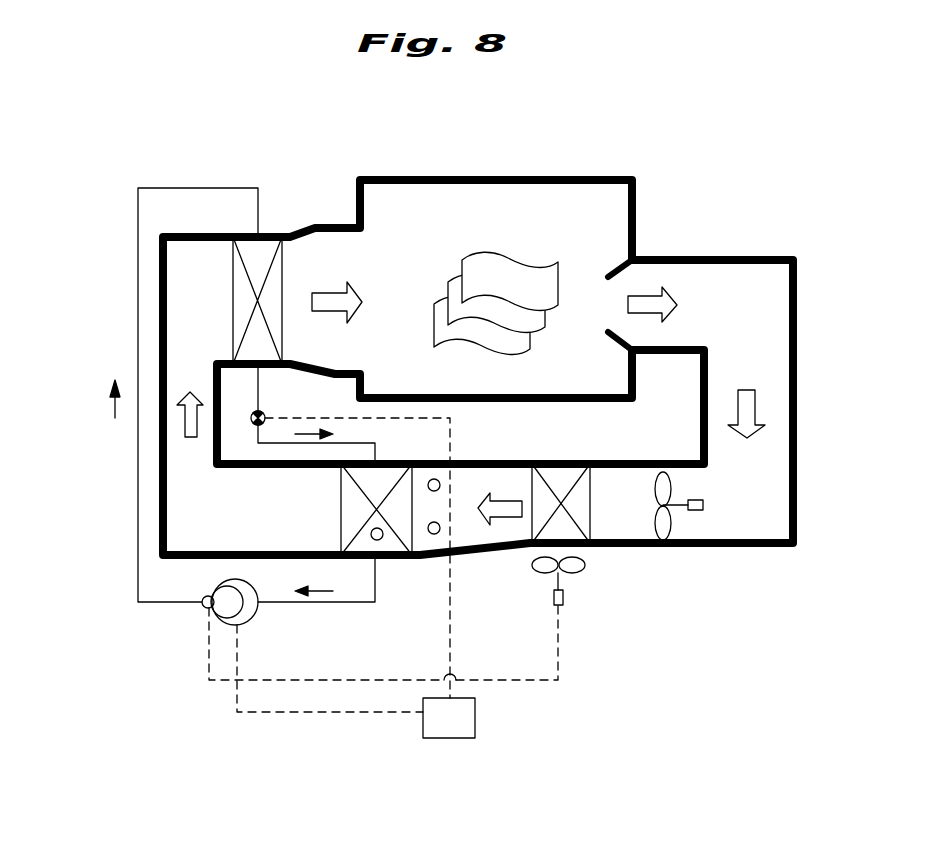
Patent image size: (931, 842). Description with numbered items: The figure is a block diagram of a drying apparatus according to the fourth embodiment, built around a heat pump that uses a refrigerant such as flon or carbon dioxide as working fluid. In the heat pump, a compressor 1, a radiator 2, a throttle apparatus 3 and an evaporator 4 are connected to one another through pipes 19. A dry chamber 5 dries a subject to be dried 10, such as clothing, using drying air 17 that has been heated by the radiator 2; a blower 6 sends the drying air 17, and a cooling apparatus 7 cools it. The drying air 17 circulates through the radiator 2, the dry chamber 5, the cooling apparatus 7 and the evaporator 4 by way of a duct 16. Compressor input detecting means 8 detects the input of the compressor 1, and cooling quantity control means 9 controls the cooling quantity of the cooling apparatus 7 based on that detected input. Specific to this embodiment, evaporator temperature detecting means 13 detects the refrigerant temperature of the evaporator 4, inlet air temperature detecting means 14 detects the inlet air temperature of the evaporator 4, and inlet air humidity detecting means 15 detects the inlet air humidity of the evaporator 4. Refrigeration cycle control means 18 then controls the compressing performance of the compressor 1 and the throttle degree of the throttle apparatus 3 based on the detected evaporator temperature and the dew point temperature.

The compressor 1 is at (240, 620).
The radiator 2 is at (243, 246).
The throttle apparatus 3 is at (252, 425).
The evaporator 4 is at (400, 545).
The dry chamber 5 is at (637, 219).
The blower 6 is at (665, 535).
The cooling apparatus 7 is at (545, 530).
The compressor input detecting means 8 is at (207, 608).
The cooling quantity control means 9 is at (550, 573).
The subject to be dried 10 is at (503, 268).
The evaporator temperature detecting means 13 is at (377, 540).
The inlet air temperature detecting means 14 is at (437, 480).
The inlet air humidity detecting means 15 is at (433, 535).
The duct 16 is at (160, 350).
The drying air 17 is at (185, 423).
The refrigeration cycle control means 18 is at (462, 733).
The pipes 19 is at (137, 510).